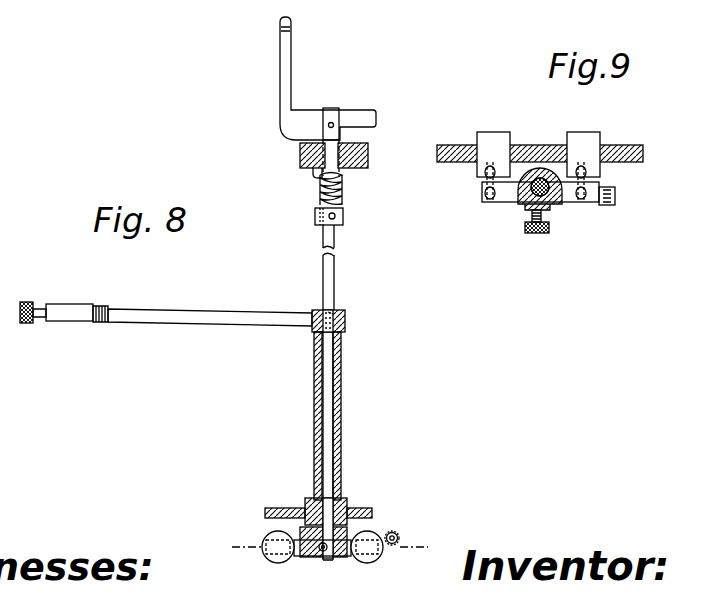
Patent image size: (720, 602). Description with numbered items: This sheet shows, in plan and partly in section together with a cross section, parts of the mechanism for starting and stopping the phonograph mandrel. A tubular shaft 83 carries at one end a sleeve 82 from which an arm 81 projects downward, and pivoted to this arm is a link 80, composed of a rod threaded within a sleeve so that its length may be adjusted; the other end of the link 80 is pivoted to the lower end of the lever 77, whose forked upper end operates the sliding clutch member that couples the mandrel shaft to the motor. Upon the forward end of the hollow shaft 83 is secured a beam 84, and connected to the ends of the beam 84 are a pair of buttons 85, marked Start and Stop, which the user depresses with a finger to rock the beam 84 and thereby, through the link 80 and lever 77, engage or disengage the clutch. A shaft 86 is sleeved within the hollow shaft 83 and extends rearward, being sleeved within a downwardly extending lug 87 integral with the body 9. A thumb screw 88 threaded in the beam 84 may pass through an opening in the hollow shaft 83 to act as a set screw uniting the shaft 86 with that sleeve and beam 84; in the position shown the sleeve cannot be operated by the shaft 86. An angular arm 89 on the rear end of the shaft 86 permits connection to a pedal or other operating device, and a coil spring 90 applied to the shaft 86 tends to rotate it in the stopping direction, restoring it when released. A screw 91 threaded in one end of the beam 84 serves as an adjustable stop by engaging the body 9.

In FIG. 8, the body or bed plate 9 is at (370, 516).
In FIG. 9, the body or bed plate 9 is at (643, 157).
In FIG. 8, the lever 77 is at (36, 326).
In FIG. 8, the link 80 is at (222, 320).
In FIG. 8, the arm 81 is at (340, 311).
In FIG. 8, the sleeve 82 is at (346, 322).
In FIG. 8, the tubular shaft 83 is at (340, 416).
In FIG. 9, the tubular shaft 83 is at (533, 211).
In FIG. 8, the beam 84 is at (312, 557).
In FIG. 9, the beam 84 is at (512, 204).
In FIG. 8, the buttons 85 is at (383, 572).
In FIG. 9, the buttons 85 is at (609, 130).
In FIG. 8, the shaft 86 is at (335, 288).
In FIG. 9, the shaft 86 is at (557, 200).
In FIG. 8, the lug 87 is at (366, 169).
In FIG. 9, the thumb screw 88 is at (545, 232).
In FIG. 8, the angular arm 89 is at (291, 81).
In FIG. 8, the coil spring 90 is at (341, 203).
In FIG. 8, the screw 91 is at (399, 533).
In FIG. 9, the screw 91 is at (615, 205).